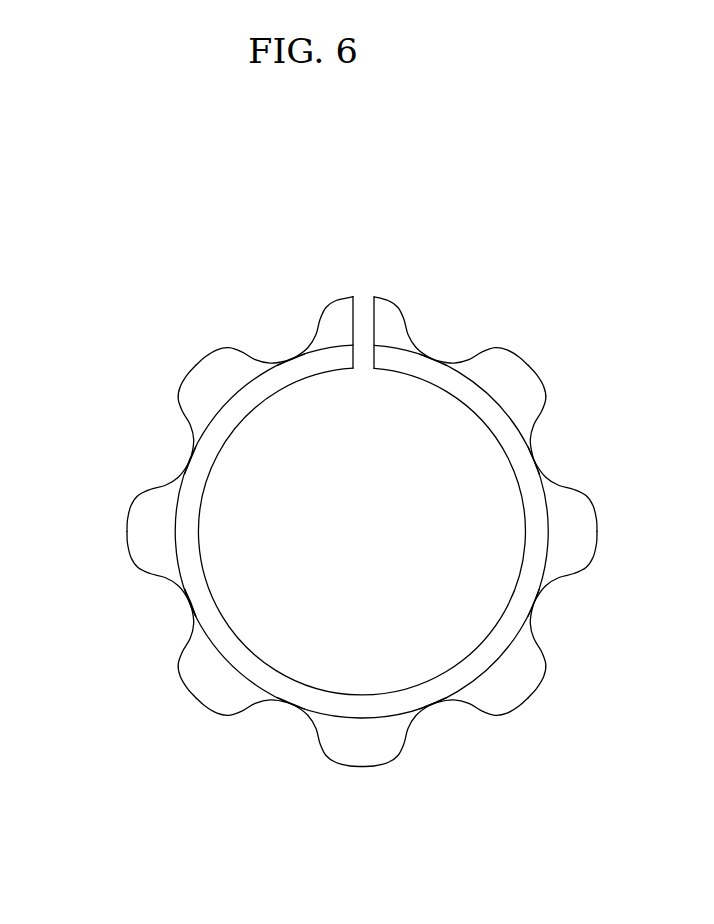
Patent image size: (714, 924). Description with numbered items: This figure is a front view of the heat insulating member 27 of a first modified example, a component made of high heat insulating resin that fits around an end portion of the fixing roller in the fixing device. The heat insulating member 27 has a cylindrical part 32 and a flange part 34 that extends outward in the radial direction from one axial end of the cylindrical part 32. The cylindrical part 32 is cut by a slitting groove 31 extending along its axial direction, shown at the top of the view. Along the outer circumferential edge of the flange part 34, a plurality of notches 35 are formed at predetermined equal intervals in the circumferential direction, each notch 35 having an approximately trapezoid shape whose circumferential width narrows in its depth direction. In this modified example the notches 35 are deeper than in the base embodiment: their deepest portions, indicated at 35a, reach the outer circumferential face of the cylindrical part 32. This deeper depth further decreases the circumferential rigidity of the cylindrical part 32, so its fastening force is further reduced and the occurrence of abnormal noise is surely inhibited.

The heat insulating member 27 is at (282, 247).
The slitting groove 31 is at (362, 352).
The cylindrical part 32 is at (242, 410).
The flange part 34 is at (145, 535).
The notch 35 is at (172, 593).
The bottom of recess 35a is at (187, 603).